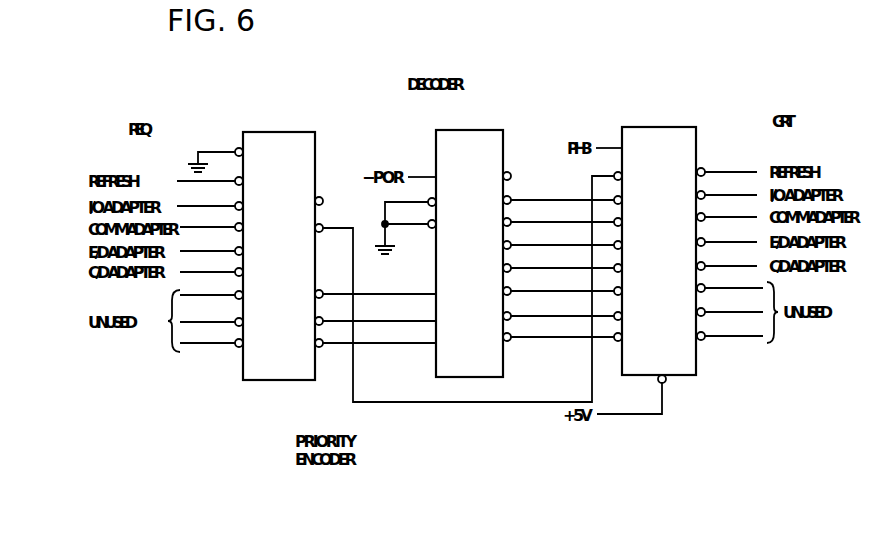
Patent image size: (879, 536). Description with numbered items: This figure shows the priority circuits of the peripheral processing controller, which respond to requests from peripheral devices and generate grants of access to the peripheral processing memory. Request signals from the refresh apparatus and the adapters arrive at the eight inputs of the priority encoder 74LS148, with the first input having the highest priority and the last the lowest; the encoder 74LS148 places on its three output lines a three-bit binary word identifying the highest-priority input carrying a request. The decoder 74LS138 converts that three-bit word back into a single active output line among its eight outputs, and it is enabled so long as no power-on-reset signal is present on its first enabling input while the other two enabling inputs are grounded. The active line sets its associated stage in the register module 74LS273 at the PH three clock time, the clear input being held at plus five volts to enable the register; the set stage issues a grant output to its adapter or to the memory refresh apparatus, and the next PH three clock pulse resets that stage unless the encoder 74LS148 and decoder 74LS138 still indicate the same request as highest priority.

The priority encoder 74LS148 is at (317, 423).
The decoder 74LS138 is at (412, 93).
The register module 74LS273 is at (659, 244).